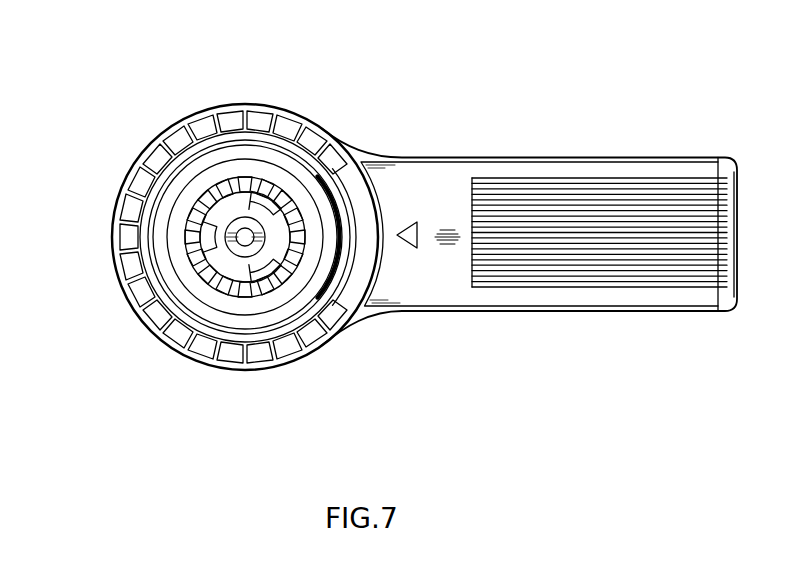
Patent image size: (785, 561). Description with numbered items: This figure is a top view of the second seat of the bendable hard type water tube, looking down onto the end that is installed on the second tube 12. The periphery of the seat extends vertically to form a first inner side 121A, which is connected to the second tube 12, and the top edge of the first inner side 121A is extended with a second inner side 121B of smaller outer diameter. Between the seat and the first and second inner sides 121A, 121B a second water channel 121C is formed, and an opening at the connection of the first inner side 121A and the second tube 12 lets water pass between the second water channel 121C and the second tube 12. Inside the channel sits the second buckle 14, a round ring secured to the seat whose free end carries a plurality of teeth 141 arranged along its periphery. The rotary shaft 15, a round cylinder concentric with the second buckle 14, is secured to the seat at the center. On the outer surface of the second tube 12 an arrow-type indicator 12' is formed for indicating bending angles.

The second tube 12 is at (529, 204).
The indicator 12' is at (419, 153).
The second buckle 14 is at (238, 165).
The teeth 141 is at (297, 205).
The rotary shaft 15 is at (245, 253).
The first inner side 121A is at (172, 328).
The second inner side 121B is at (150, 272).
The second water channel 121C is at (150, 220).